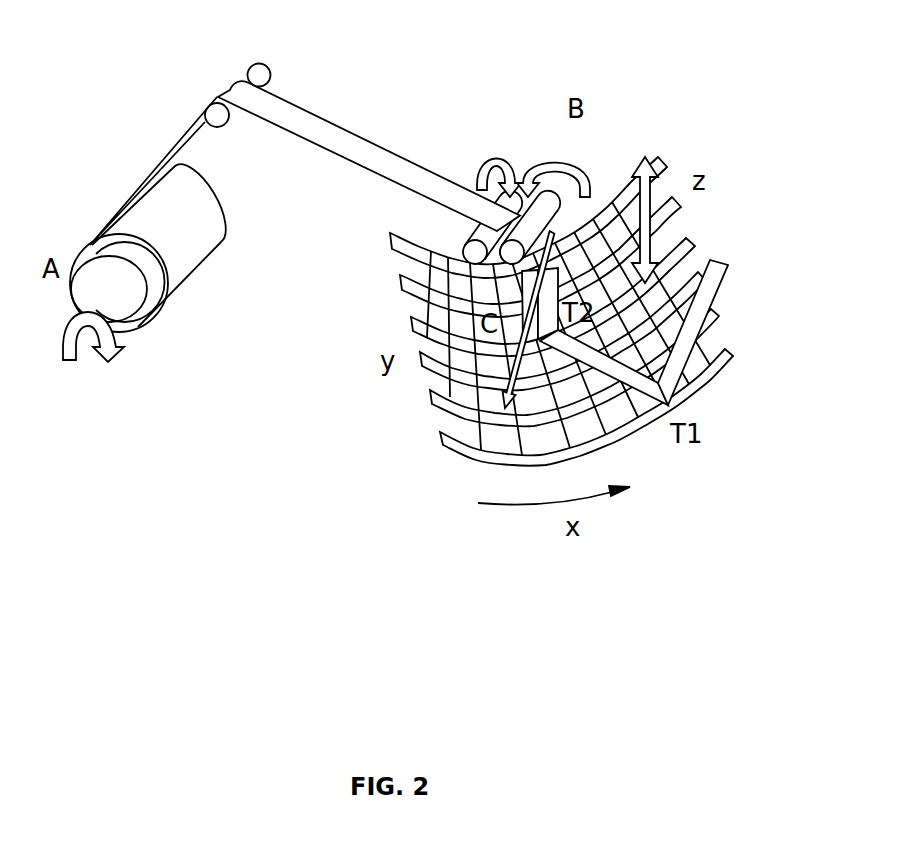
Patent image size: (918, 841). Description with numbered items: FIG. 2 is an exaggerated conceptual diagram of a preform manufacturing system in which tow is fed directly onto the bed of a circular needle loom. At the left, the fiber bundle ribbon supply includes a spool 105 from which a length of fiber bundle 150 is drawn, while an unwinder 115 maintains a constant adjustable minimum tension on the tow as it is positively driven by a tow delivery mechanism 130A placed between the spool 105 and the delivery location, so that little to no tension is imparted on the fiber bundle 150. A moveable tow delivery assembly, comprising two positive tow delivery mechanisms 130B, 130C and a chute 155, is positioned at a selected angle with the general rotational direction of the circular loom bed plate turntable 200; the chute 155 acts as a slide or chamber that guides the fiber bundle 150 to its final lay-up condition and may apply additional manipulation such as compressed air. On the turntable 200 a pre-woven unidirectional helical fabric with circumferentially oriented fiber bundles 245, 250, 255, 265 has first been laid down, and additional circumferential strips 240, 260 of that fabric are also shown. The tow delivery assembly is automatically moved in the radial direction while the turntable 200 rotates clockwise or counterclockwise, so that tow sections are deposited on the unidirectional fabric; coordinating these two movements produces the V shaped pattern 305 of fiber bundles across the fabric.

The spool 105 is at (182, 252).
The unwinder 115 is at (117, 315).
The tow delivery mechanism 130A is at (257, 75).
The positive tow delivery mechanism 130B is at (473, 255).
The positive tow delivery mechanism 130C is at (543, 213).
The fiber bundle 150 is at (322, 127).
The chute 155 is at (540, 323).
The circular loom bed plate turntable 200 is at (727, 403).
The first track segment 240 is at (415, 252).
The fiber bundle 245 is at (672, 198).
The fiber bundle 250 is at (685, 238).
The fiber bundle 255 is at (692, 272).
The fifth track segment 260 is at (450, 408).
The fiber bundle 265 is at (725, 358).
The V shaped pattern 305 is at (712, 293).